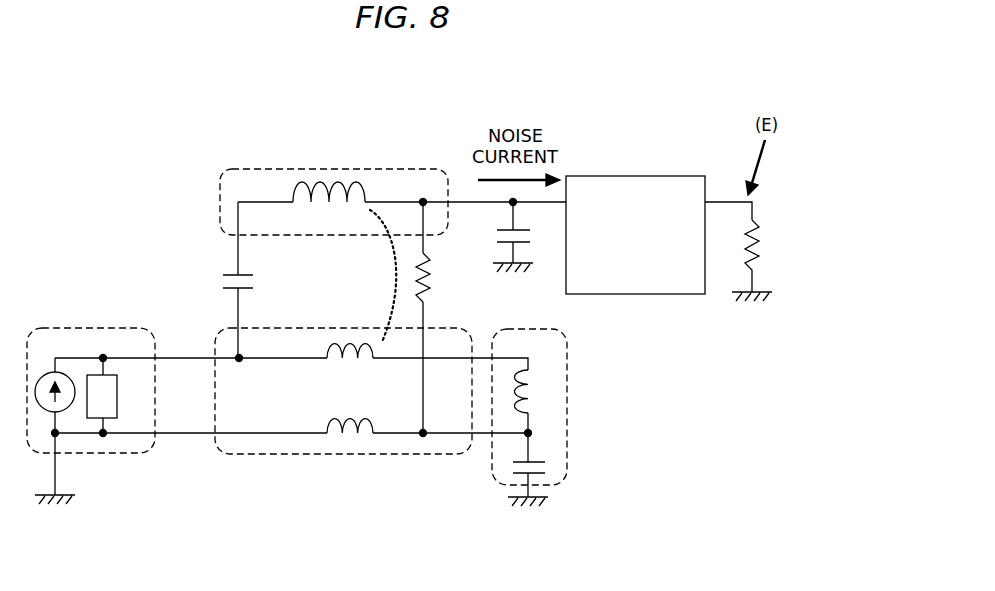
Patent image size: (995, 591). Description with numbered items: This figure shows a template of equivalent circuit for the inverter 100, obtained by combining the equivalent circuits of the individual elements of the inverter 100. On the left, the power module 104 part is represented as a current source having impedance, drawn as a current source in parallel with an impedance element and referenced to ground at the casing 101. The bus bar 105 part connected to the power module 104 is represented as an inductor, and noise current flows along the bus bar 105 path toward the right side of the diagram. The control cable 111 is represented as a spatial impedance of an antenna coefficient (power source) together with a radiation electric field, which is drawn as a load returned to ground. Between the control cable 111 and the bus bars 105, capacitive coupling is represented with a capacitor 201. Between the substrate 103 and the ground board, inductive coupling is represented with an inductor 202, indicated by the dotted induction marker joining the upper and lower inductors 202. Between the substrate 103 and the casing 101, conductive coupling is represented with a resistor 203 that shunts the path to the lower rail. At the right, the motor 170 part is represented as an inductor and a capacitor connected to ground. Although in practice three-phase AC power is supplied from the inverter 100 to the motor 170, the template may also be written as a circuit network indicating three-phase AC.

The inverter 100 is at (216, 132).
The casing 101 is at (72, 488).
The substrate 103 is at (372, 169).
The power module 104 is at (92, 328).
The bus bar 105 is at (345, 454).
The control cable 111 is at (637, 176).
The motor 170 is at (568, 410).
The capacitor 201 is at (226, 277).
The inductor 202 is at (318, 182).
The resistor 203 is at (430, 300).